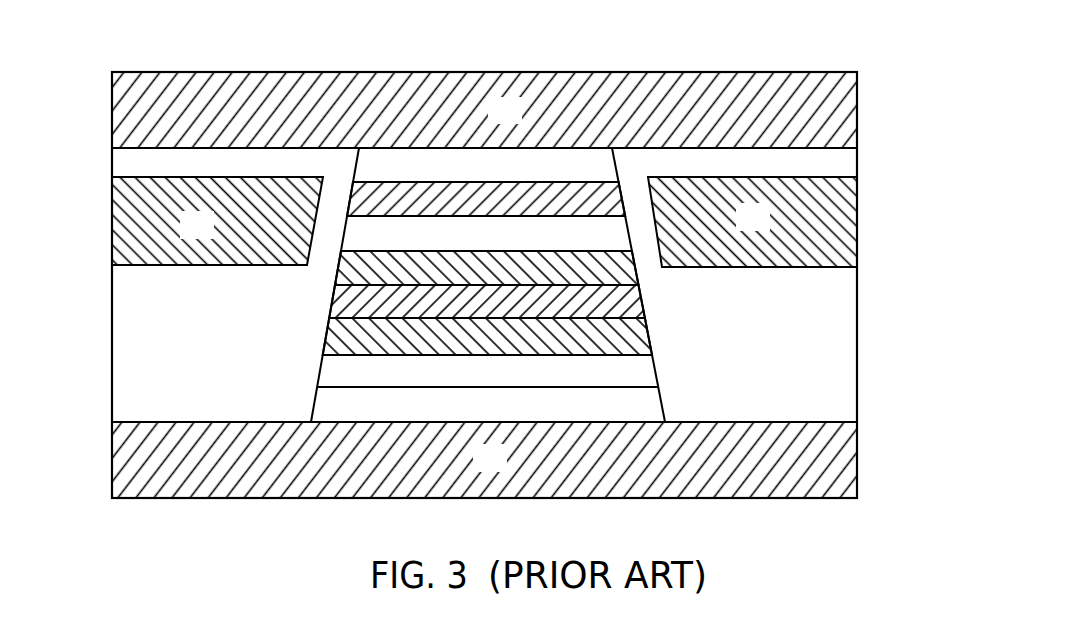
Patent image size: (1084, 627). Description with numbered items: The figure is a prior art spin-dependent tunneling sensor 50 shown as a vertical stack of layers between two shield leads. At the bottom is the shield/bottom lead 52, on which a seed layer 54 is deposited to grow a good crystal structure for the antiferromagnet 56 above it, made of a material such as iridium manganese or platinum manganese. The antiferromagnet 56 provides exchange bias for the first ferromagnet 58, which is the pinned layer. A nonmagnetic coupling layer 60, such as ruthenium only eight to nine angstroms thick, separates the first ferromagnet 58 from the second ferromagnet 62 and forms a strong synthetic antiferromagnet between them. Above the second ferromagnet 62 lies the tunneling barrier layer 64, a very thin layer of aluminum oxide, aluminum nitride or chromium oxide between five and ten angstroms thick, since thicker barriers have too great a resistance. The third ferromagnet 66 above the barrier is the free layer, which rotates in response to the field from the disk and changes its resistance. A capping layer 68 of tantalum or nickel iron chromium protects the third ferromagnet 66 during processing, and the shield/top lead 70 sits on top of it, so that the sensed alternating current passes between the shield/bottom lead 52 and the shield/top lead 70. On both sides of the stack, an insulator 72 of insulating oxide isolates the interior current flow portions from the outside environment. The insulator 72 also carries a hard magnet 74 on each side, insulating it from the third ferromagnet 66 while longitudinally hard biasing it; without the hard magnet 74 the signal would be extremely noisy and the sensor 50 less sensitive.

The spin-dependent tunneling sensor 50 is at (829, 48).
The shield/bottom lead 52 is at (478, 469).
The seed layer 54 is at (308, 409).
The antiferromagnet 56 is at (655, 367).
The first ferromagnet 58 is at (320, 332).
The nonmagnetic coupling layer 60 is at (645, 310).
The second ferromagnet 62 is at (332, 271).
The tunneling barrier layer 64 is at (628, 230).
The third ferromagnet 66 is at (547, 181).
The capping layer 68 is at (616, 165).
The shield/top lead 70 is at (493, 121).
The insulator 72 is at (186, 351).
The hard magnet 74 is at (185, 235).